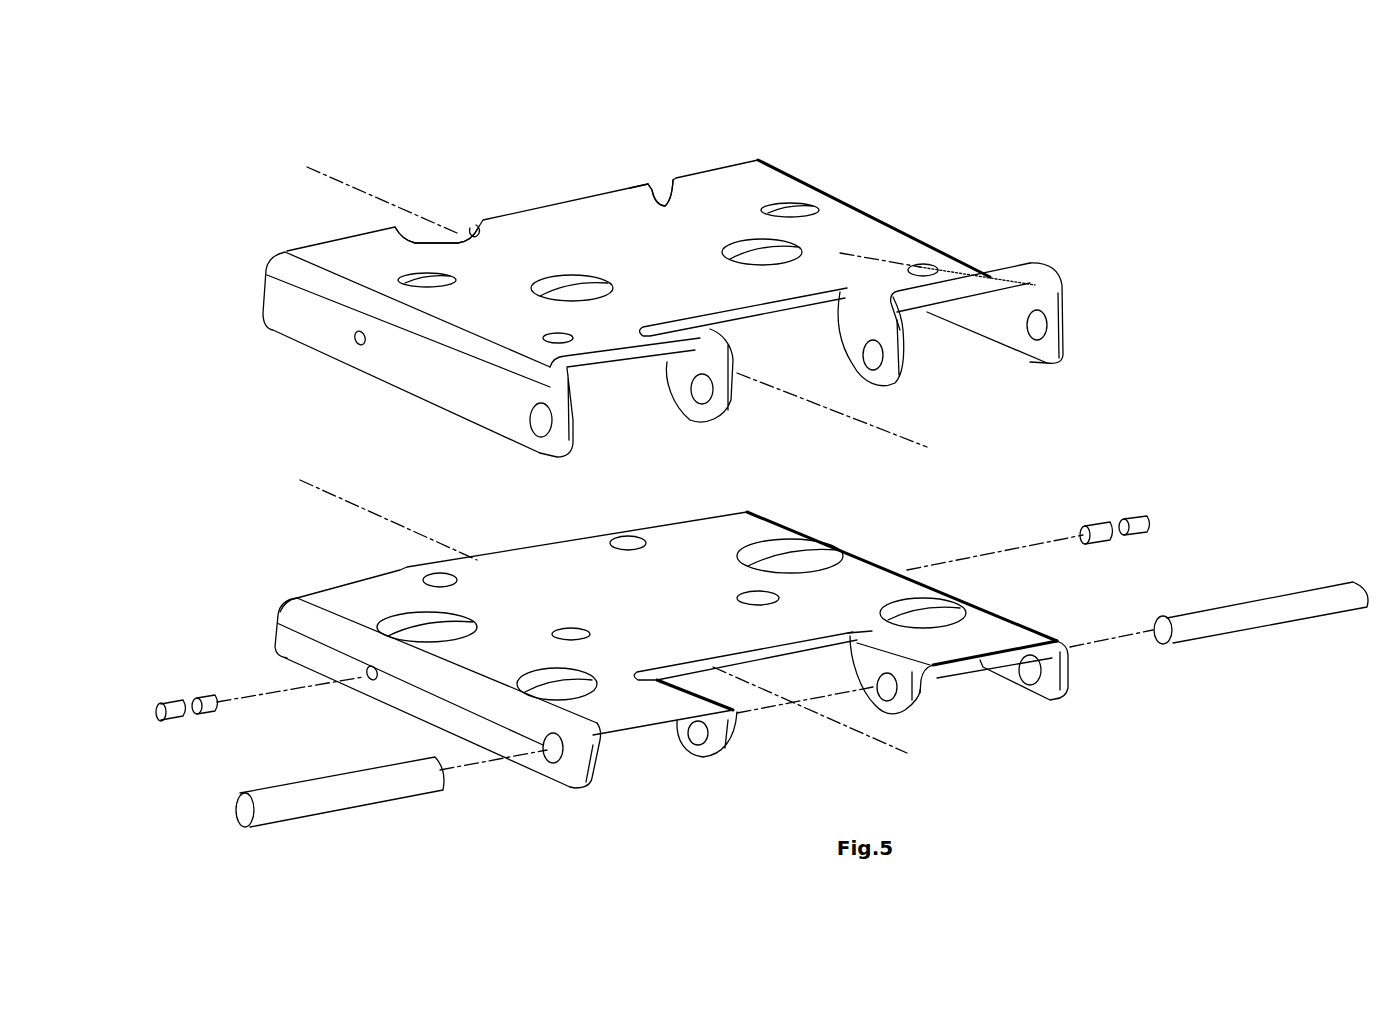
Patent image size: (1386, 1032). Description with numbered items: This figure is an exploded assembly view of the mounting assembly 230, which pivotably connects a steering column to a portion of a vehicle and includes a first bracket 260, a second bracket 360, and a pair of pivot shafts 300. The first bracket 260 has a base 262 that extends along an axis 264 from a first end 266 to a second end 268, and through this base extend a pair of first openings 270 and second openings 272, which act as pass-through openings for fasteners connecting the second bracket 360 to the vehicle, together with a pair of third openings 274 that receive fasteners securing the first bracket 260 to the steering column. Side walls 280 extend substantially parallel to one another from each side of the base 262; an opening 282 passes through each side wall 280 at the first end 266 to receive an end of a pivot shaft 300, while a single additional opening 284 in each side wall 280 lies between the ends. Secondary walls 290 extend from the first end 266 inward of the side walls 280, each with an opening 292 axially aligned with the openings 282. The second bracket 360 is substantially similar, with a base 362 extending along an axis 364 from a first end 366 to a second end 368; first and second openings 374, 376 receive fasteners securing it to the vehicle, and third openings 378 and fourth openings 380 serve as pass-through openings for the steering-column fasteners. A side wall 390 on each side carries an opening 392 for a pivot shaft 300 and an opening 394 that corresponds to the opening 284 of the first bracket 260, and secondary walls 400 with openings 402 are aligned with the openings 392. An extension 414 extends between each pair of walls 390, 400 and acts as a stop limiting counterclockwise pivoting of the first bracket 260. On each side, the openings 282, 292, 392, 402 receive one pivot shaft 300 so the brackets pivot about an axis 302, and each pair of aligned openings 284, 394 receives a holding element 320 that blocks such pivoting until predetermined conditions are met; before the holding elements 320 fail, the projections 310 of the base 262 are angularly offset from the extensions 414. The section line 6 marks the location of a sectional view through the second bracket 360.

The mounting assembly 230 is at (250, 465).
The first bracket 260 is at (975, 530).
The base 262 is at (850, 592).
The axis 264 is at (838, 720).
The first end 266 is at (690, 767).
The second end 268 is at (335, 575).
The first openings 270 is at (950, 608).
The second openings 272 is at (402, 617).
The third openings 274 is at (740, 597).
The side walls 280 is at (400, 693).
The opening 282 is at (555, 770).
The additional opening 284 is at (362, 670).
The secondary walls 290 is at (722, 745).
The opening 292 is at (703, 740).
The pivot shaft 300 is at (325, 798).
The axis 302 is at (470, 767).
The projections 310 is at (645, 700).
The holding element 320 is at (180, 700).
The second bracket 360 is at (1058, 228).
The base 362 is at (740, 190).
The axis 364 is at (820, 400).
The first end 366 is at (1070, 364).
The second end 368 is at (692, 172).
The first openings 374 is at (546, 333).
The second openings 376 is at (417, 277).
The third recesses or openings 378 is at (712, 252).
The fourth openings 380 is at (437, 225).
The side wall 390 is at (420, 370).
The opening 392 is at (538, 433).
The additional opening 394 is at (350, 348).
The secondary walls 400 is at (735, 358).
The opening 402 is at (700, 397).
The extension 414 is at (543, 363).
The section line 6- 6 is at (840, 253).